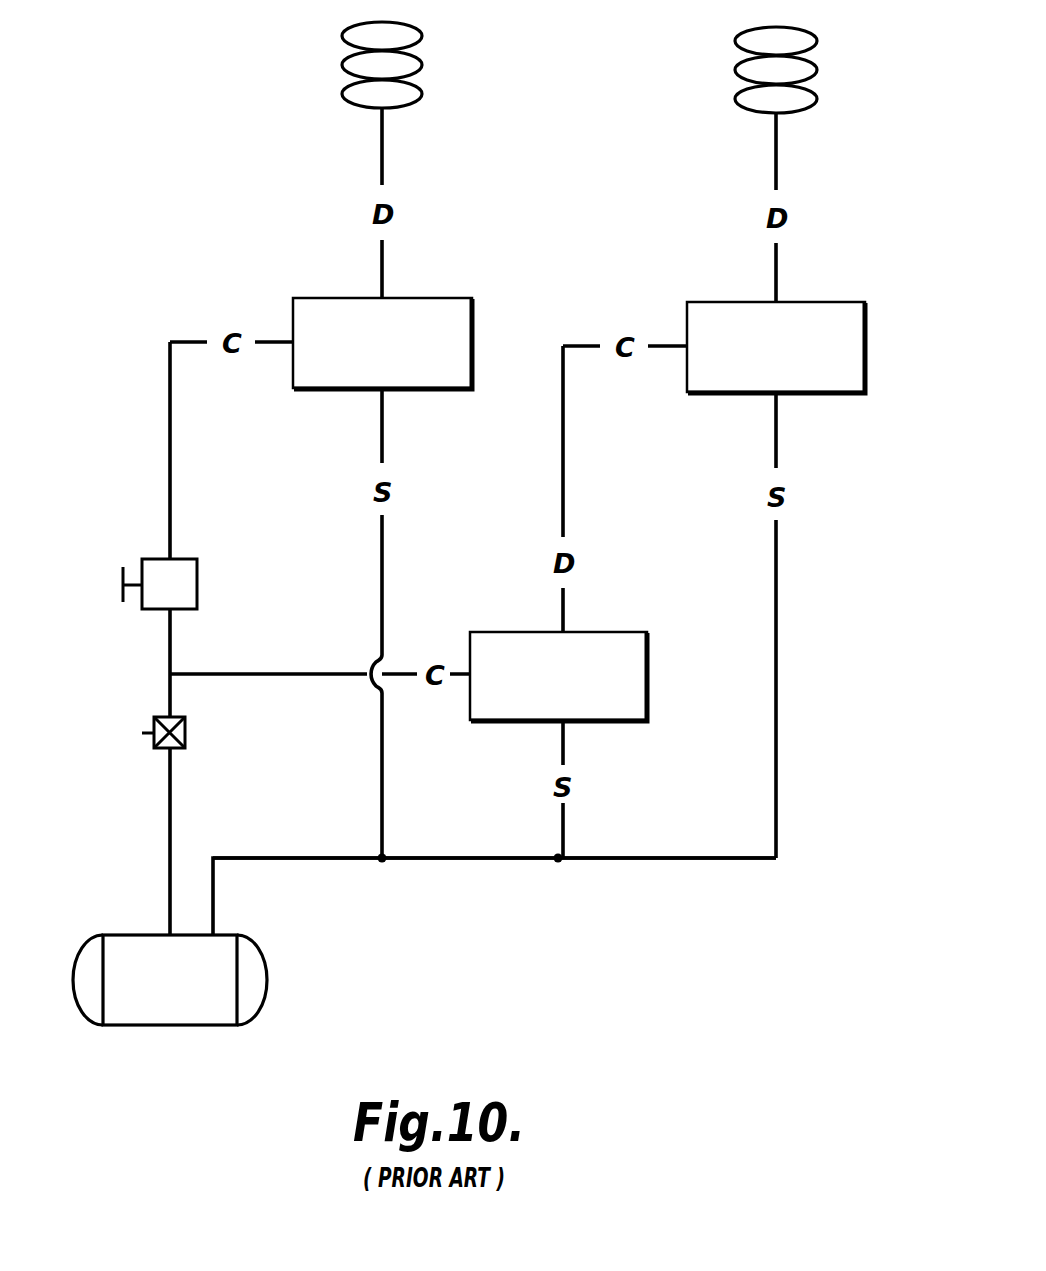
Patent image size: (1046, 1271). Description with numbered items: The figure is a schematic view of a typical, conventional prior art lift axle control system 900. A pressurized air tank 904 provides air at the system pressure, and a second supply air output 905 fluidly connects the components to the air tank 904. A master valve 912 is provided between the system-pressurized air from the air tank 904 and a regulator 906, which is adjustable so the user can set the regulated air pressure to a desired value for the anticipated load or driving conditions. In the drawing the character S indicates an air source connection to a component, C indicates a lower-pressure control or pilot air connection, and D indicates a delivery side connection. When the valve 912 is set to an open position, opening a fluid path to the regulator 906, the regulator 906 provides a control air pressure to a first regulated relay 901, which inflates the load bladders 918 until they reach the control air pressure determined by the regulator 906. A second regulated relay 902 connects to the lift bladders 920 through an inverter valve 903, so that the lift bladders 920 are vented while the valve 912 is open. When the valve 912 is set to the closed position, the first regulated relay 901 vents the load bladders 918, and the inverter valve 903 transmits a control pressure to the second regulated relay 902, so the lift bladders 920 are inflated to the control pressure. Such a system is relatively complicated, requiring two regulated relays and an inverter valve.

The lift axle control system 900 is at (723, 963).
The first regulated relay 901 is at (472, 334).
The second regulated relay 902 is at (865, 352).
The inverter valve 903 is at (647, 686).
The pressurized air tank 904 is at (265, 1000).
The second supply air output 905 is at (480, 862).
The regulator 906 is at (150, 558).
The master valve 912 is at (156, 717).
The load bladders 918 is at (350, 50).
The lift bladders 920 is at (744, 55).